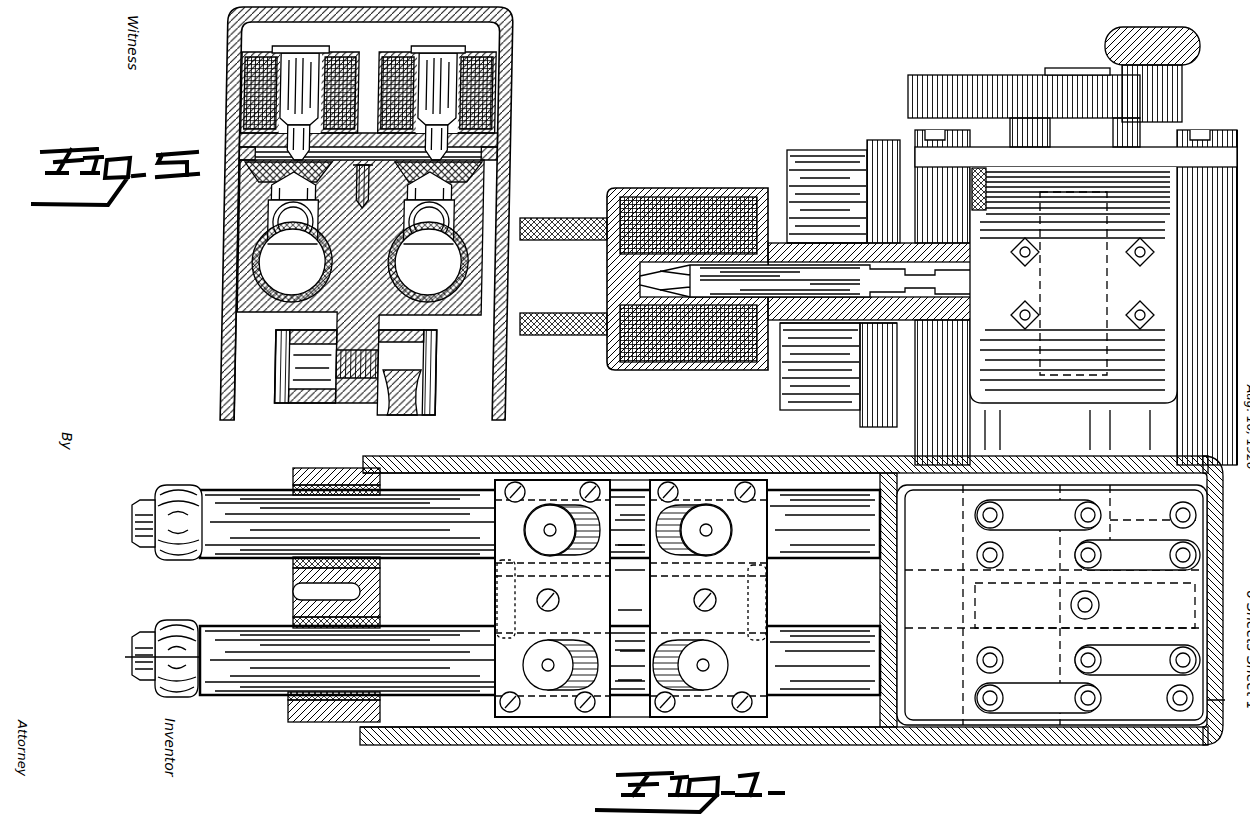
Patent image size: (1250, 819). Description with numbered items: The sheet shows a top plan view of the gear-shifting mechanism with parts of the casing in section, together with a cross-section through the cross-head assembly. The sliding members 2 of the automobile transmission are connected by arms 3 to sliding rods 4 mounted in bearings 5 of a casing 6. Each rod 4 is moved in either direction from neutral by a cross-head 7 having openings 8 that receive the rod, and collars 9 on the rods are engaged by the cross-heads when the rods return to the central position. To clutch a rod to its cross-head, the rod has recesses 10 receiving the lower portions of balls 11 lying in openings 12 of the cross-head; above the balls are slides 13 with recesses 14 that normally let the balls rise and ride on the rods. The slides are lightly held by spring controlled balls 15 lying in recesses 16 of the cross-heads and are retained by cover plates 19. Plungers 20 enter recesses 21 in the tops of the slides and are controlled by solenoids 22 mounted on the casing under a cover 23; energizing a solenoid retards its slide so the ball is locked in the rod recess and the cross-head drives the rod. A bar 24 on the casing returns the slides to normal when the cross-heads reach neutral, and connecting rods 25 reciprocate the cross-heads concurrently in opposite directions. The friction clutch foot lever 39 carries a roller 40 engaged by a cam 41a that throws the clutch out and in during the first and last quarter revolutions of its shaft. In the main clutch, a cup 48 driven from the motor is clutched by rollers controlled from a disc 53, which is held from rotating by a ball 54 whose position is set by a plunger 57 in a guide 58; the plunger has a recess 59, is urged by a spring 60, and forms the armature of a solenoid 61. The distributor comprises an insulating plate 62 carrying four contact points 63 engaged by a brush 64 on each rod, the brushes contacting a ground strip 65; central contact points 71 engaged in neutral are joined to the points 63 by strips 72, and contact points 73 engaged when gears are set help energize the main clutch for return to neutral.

In FIG. 1, the sliding members 2 is at (669, 680).
In FIG. 1, the arms 3 is at (1077, 100).
In FIG. 5, the sliding rods 4 is at (262, 300).
In FIG. 1, the sliding rods 4 is at (607, 278).
In FIG. 1, the bearings 5 is at (293, 588).
In FIG. 5, the casing 6 is at (236, 365).
In FIG. 1, the casing 6 is at (482, 456).
In FIG. 5, the cross-heads 7 is at (243, 322).
In FIG. 1, the cross-heads 7 is at (770, 495).
In FIG. 5, the openings 8 is at (292, 300).
In FIG. 1, the collars 9 is at (640, 625).
In FIG. 5, the recesses 10 is at (262, 268).
In FIG. 5, the balls 11 is at (280, 238).
In FIG. 5, the openings 12 is at (287, 218).
In FIG. 5, the slides 13 is at (255, 178).
In FIG. 1, the slides 13 is at (690, 505).
In FIG. 5, the recesses 14 is at (273, 192).
In FIG. 1, the spring controlled balls 15 is at (500, 622).
In FIG. 1, the recesses 16 is at (748, 604).
In FIG. 5, the cover plates 19 is at (500, 162).
In FIG. 1, the cover plates 19 is at (627, 597).
In FIG. 5, the plungers 20 is at (440, 98).
In FIG. 5, the recesses 21 is at (270, 170).
In FIG. 1, the recesses 21 is at (544, 530).
In FIG. 5, the solenoids 22 is at (492, 62).
In FIG. 5, the cover 23 is at (500, 12).
In FIG. 5, the bar 24 is at (470, 148).
In FIG. 5, the connecting rods 25 is at (403, 415).
In FIG. 1, the foot lever 39 is at (1178, 46).
In FIG. 1, the roller 40 is at (1165, 92).
In FIG. 1, the cam 41a is at (985, 100).
In FIG. 1, the cup 48 is at (822, 160).
In FIG. 1, the disc 53 is at (882, 150).
In FIG. 1, the ball 54 is at (888, 262).
In FIG. 1, the plunger 57 is at (825, 320).
In FIG. 1, the guide 58 is at (806, 243).
In FIG. 1, the recess 59 is at (870, 322).
In FIG. 1, the spring 60 is at (1008, 243).
In FIG. 1, the solenoid 61 is at (690, 196).
In FIG. 1, the plate 62 is at (1052, 605).
In FIG. 1, the contact points 63 is at (976, 515).
In FIG. 1, the brush 64 is at (1070, 608).
In FIG. 1, the ground strip 65 is at (1100, 605).
In FIG. 1, the contact points 71 is at (1076, 525).
In FIG. 1, the strips 72 is at (1087, 606).
In FIG. 1, the contact points 73 is at (1170, 512).